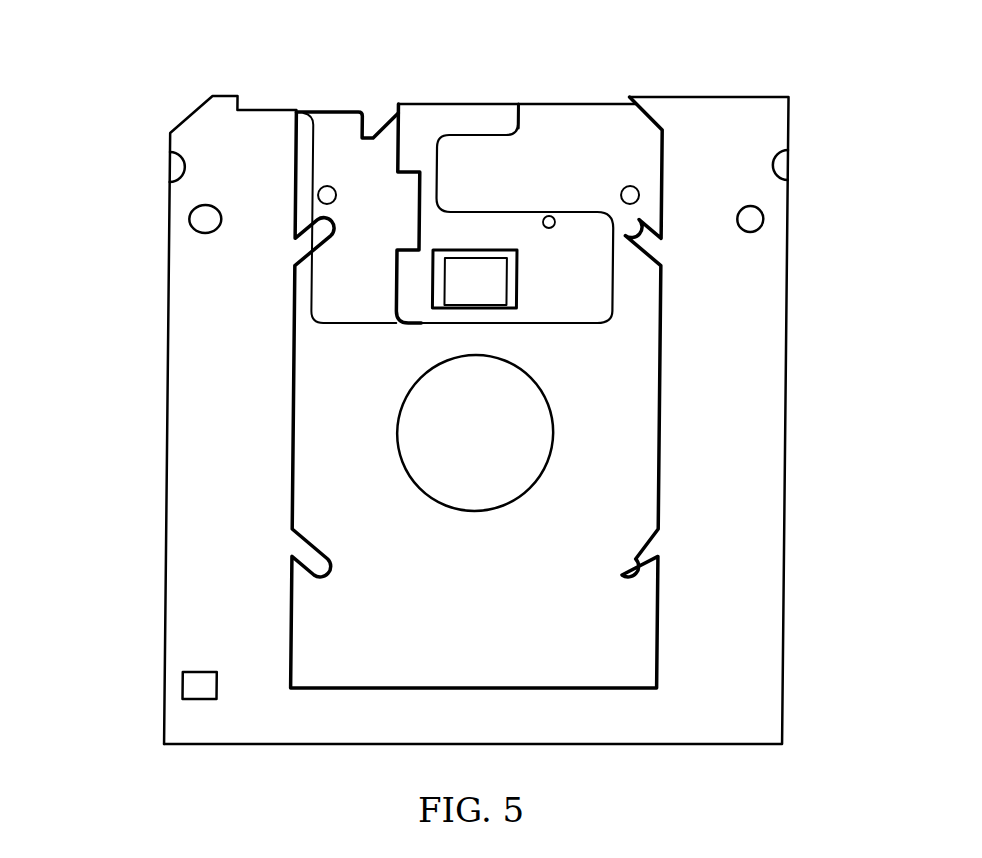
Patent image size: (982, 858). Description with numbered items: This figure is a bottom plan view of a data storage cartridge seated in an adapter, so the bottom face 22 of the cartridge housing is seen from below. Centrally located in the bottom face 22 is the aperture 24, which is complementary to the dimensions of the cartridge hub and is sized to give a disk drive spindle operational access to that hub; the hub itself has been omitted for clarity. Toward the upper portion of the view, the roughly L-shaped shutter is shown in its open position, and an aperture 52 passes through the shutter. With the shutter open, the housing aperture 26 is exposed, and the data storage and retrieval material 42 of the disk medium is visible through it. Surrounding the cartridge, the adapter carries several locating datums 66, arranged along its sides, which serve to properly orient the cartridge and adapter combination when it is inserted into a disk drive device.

The bottom face 22 is at (495, 598).
The aperture 24 is at (493, 442).
The housing aperture 26 is at (468, 257).
The data storage and retrieval material 42 is at (488, 272).
The aperture 52 is at (438, 250).
The locating datums 66 is at (323, 186).